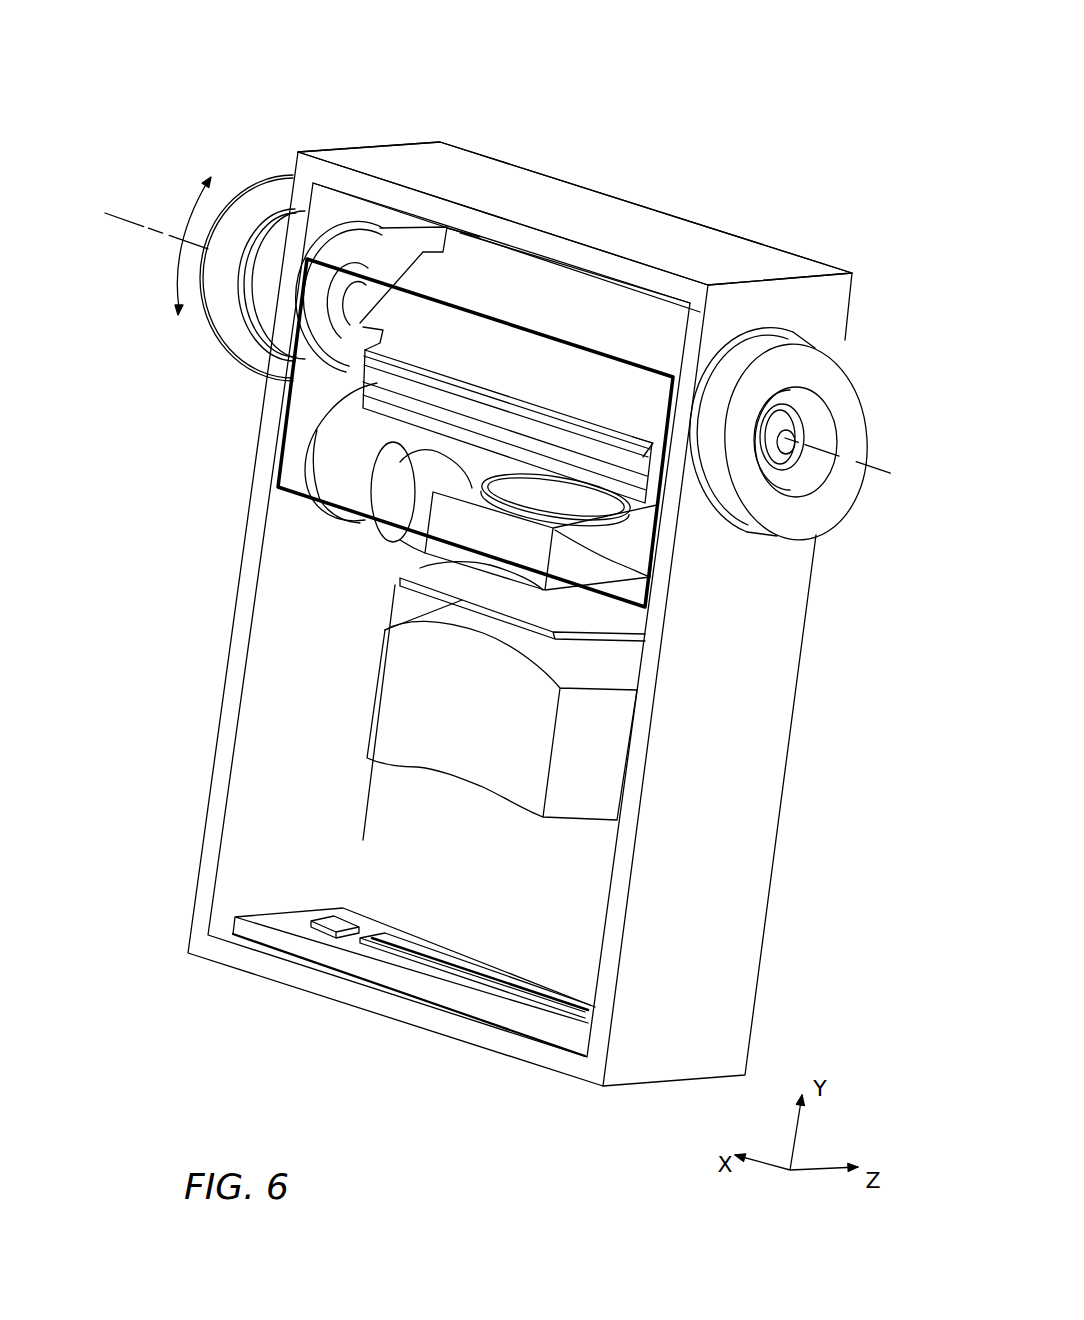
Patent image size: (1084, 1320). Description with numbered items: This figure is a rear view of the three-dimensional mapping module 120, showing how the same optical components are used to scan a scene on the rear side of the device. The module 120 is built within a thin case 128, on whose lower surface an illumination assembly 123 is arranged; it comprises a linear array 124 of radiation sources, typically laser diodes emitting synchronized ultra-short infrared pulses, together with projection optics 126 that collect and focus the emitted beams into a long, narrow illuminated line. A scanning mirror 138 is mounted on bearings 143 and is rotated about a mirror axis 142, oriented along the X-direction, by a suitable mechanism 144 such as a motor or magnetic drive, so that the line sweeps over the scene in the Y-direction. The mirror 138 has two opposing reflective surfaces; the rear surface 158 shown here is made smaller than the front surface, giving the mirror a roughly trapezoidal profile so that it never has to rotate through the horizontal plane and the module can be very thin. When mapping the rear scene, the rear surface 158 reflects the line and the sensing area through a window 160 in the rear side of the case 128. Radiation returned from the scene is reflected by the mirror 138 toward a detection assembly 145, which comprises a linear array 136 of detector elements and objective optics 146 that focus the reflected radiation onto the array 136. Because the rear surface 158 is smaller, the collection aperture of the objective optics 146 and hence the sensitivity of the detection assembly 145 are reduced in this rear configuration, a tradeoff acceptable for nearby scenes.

The mapping module 120 is at (840, 165).
The illumination assembly 123 is at (212, 385).
The linear array of radiation sources 124 is at (320, 932).
The projection optics 126 is at (266, 398).
The case 128 is at (370, 177).
The linear array of detector elements 136 is at (458, 970).
The scanning mirror 138 is at (378, 383).
The mirror axis 142 is at (866, 475).
The bearings 143 is at (825, 363).
The mechanism 144 is at (265, 195).
The detection assembly 145 is at (826, 540).
The objective optics 146 is at (640, 826).
The rear surface 158 is at (541, 270).
The window 160 is at (633, 387).